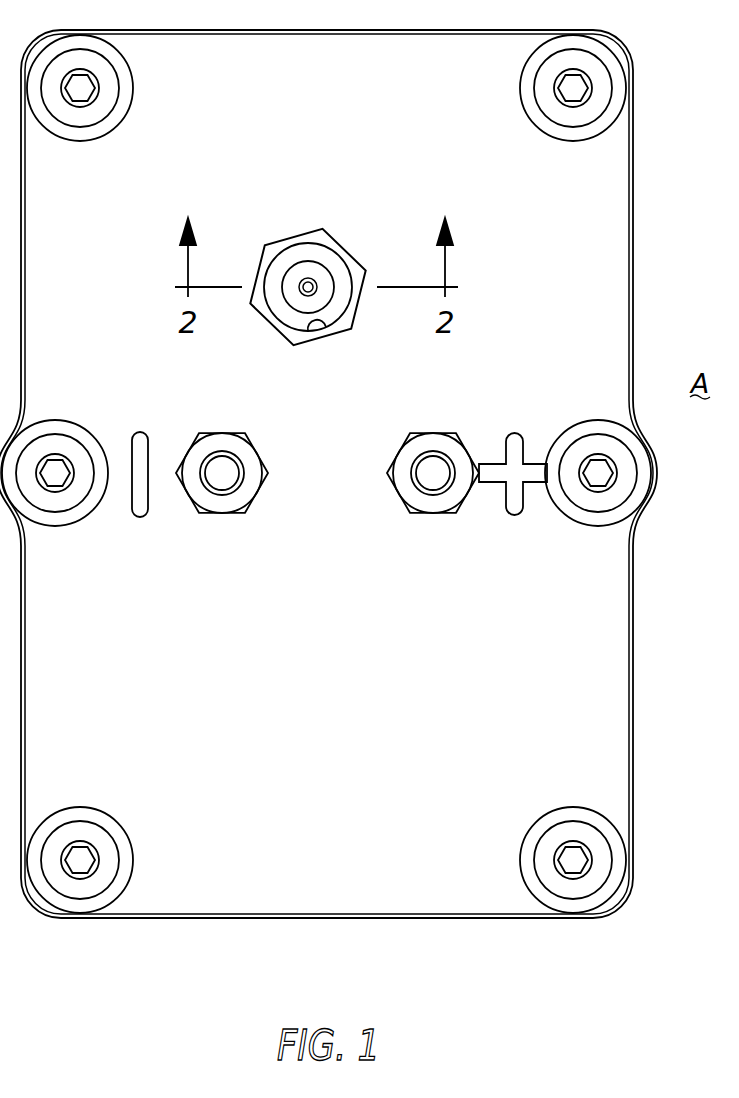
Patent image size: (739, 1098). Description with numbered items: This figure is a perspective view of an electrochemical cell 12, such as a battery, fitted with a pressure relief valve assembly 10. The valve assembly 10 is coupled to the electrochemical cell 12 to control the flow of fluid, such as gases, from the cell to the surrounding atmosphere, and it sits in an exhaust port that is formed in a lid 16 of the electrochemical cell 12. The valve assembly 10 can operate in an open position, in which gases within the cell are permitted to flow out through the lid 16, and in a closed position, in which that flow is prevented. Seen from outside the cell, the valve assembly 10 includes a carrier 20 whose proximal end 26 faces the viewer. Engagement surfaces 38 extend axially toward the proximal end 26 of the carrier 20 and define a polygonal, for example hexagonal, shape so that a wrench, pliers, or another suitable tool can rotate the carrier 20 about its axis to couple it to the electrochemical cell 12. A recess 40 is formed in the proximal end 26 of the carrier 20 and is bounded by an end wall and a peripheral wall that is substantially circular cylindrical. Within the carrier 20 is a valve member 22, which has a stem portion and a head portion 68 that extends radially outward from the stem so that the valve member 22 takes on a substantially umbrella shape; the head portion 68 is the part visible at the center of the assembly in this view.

The pressure relief valve assembly 10 is at (303, 283).
The electrochemical cell 12 is at (633, 219).
The lid 16 is at (603, 287).
The carrier 20 is at (327, 242).
The valve member 22 is at (292, 305).
The proximal end 26 is at (270, 262).
The engagement surfaces 38 is at (318, 233).
The recess 40 is at (318, 317).
The head portion 68 is at (325, 287).